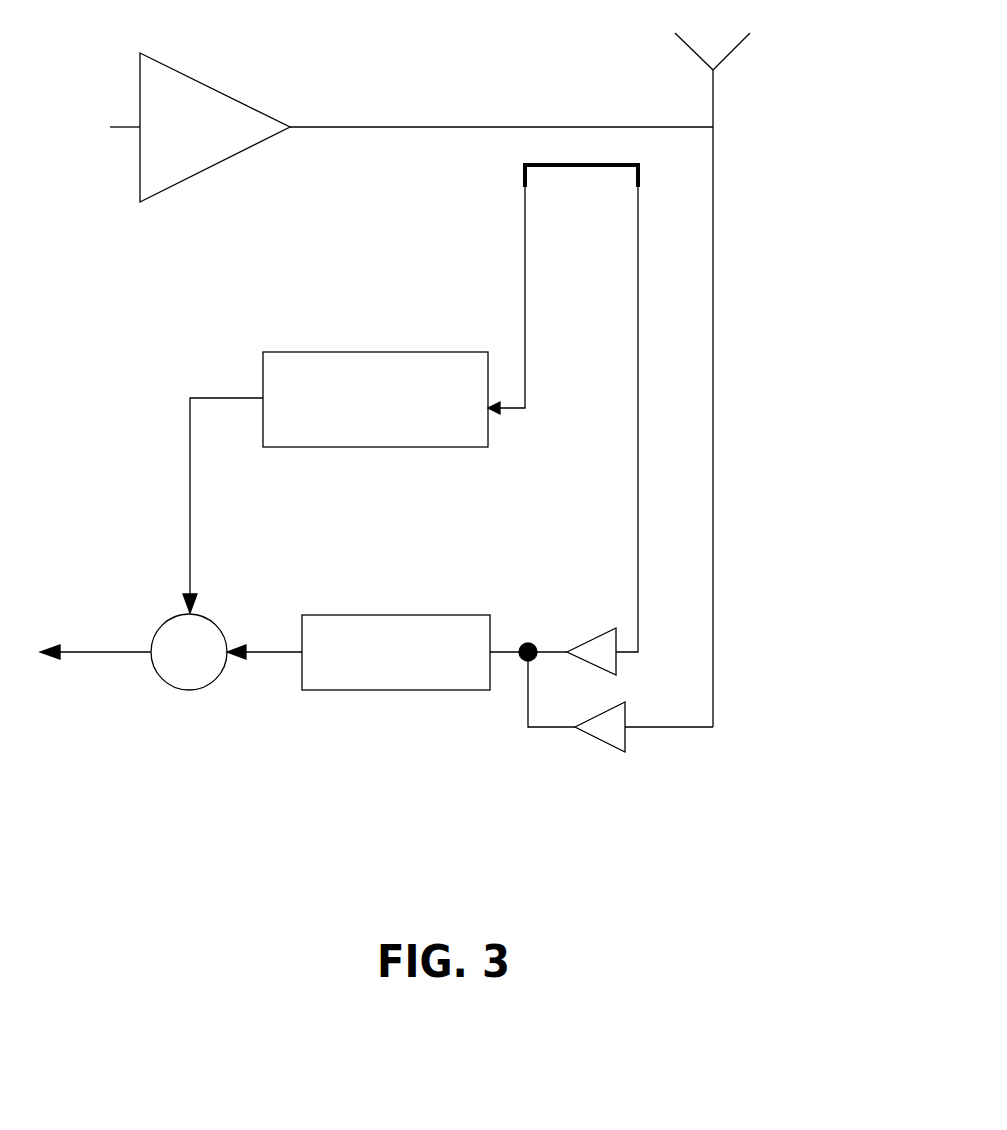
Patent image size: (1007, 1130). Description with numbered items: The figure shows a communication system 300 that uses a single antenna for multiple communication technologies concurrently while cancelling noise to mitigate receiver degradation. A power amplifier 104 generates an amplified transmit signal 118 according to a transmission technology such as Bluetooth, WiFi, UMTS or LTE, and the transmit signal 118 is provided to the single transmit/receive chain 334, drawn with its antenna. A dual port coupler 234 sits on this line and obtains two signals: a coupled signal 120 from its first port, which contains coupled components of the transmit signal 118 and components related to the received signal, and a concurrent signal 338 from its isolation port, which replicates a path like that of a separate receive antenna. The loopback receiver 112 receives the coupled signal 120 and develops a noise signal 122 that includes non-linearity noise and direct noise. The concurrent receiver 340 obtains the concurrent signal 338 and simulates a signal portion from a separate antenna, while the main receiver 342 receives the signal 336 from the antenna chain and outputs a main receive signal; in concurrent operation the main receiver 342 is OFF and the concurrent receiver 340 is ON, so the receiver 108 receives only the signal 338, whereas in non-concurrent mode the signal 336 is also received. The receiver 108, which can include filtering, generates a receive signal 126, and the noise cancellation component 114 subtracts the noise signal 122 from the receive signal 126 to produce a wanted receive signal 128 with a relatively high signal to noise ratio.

The power amplifier 104 is at (190, 78).
The transmit signal 118 is at (375, 127).
The transmit/receive chain 334 is at (765, 115).
The coupler 234 is at (548, 168).
The coupled signal 120 is at (525, 305).
The concurrent signal 338 is at (620, 657).
The loopback receiver 112 is at (375, 399).
The noise signal 122 is at (190, 475).
The noise cancellation component 114 is at (162, 627).
The wanted receive signal 128 is at (83, 652).
The receive signal 126 is at (287, 650).
The receiver 108 is at (396, 652).
The concurrent receiver 340 is at (600, 630).
The main receiver 342 is at (606, 711).
The signal 336 is at (668, 727).
The communication system 300 is at (147, 838).